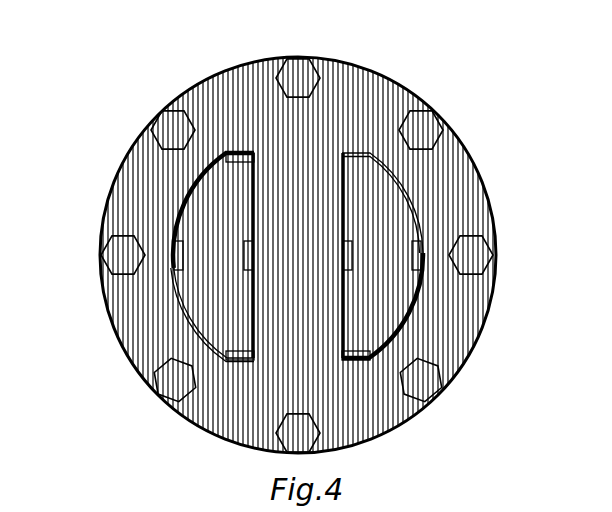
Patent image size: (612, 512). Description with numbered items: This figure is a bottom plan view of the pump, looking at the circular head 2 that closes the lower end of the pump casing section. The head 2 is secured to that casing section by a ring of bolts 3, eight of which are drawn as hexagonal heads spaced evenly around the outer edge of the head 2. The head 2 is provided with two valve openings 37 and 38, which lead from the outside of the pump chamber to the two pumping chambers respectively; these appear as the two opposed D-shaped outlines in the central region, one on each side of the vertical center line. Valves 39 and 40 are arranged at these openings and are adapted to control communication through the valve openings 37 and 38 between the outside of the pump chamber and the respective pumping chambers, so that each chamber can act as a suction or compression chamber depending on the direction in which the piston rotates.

The head 2 is at (477, 170).
The bolts 3 is at (438, 385).
The valve opening 37 is at (408, 200).
The valve opening 38 is at (180, 192).
The valve 39 is at (375, 290).
The valve 40 is at (208, 288).